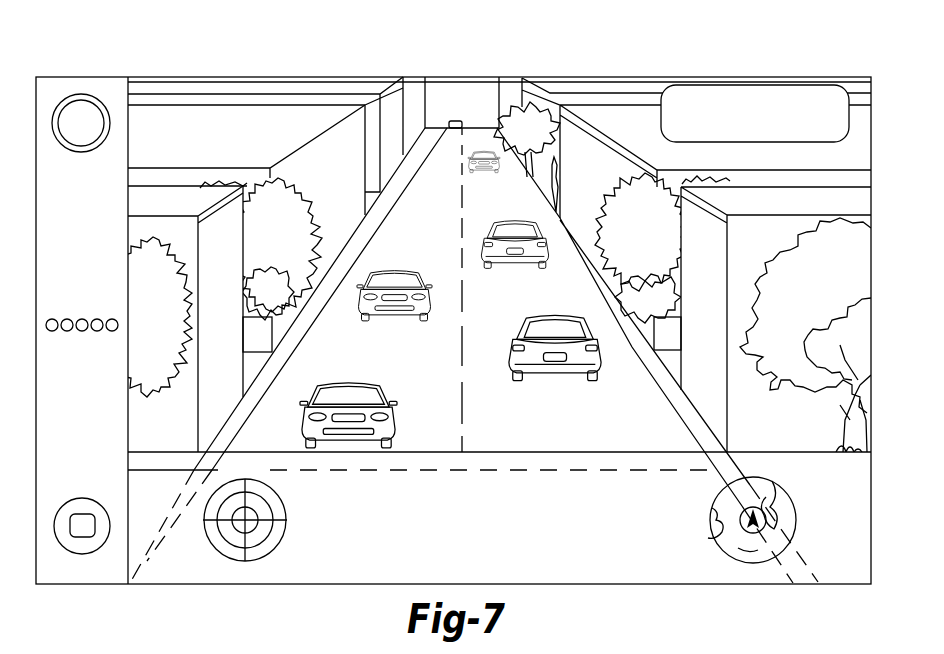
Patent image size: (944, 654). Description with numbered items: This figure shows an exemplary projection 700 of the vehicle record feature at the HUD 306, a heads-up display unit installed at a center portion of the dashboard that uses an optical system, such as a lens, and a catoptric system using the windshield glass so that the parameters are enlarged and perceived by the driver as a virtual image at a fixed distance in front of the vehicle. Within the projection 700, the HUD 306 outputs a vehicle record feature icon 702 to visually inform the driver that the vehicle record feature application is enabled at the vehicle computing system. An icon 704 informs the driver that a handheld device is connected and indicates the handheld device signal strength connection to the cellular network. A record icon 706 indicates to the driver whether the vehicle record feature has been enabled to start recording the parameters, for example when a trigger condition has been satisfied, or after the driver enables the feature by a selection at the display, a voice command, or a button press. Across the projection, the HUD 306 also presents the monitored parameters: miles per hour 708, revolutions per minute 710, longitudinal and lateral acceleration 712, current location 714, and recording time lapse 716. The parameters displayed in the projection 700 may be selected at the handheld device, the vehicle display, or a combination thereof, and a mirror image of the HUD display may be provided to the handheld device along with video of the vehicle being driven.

The projection 700 is at (716, 57).
The HUD 306 is at (264, 77).
The vehicle record feature icon 702 is at (82, 502).
The icon 704 is at (52, 318).
The record icon 706 is at (81, 96).
The miles per hour (MPH) 708 is at (530, 507).
The revolutions per minute (RPM) 710 is at (503, 556).
The longitudinal and lateral acceleration 712 is at (214, 549).
The current location 714 is at (755, 563).
The recording time lapse 716 is at (792, 115).